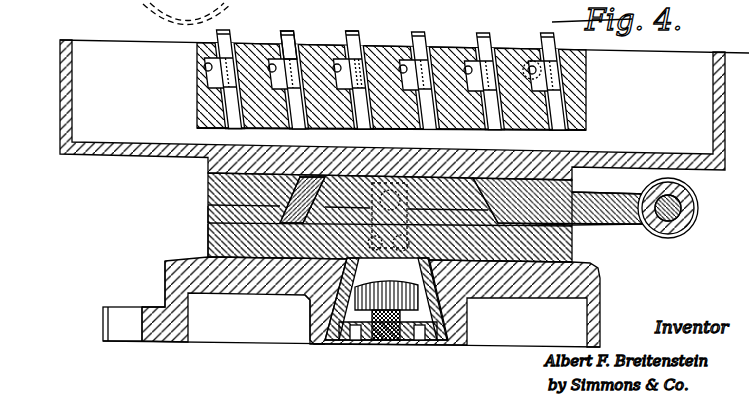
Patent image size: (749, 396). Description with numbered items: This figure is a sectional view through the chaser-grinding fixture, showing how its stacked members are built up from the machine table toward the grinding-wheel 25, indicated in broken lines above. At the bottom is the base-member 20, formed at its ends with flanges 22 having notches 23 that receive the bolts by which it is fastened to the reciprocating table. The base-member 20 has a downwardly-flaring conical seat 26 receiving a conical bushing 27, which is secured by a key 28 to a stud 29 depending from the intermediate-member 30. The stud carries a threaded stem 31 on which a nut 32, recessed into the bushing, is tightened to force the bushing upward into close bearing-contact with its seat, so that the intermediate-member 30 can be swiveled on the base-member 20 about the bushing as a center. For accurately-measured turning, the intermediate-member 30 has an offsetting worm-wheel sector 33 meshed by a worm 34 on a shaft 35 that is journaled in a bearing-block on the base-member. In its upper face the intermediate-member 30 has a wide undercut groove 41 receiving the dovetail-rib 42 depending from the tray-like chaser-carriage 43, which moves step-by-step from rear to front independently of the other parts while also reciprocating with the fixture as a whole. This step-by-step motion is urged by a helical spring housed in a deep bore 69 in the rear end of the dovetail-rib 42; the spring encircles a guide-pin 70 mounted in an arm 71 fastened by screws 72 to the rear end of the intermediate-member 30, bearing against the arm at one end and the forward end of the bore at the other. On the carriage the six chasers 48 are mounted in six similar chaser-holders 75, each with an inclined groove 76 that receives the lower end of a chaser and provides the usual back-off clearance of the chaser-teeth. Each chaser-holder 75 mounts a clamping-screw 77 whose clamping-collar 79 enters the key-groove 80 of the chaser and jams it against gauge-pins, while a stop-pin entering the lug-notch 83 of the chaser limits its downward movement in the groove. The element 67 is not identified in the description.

The base-member 20 is at (165, 262).
The flanges 22 is at (123, 305).
The notches 23 is at (120, 320).
The grinding-wheel 25 is at (146, 15).
The conical seat 26 is at (315, 320).
The conical bushing 27 is at (450, 330).
The key 28 is at (315, 297).
The stud 29 is at (437, 302).
The intermediate-member 30 is at (212, 226).
The threaded stem 31 is at (387, 340).
The nut 32 is at (363, 341).
The worm-wheel sector 33 is at (590, 225).
The worm 34 is at (697, 208).
The shaft 35 is at (670, 222).
The undercut groove 41 is at (563, 180).
The dovetail-rib 42 is at (212, 200).
The chaser-carriage 43 is at (59, 152).
The chasers 48 is at (291, 40).
The pin head 67 is at (353, 28).
The bore 69 is at (413, 203).
The guide-pin 70 is at (387, 187).
The arm 71 is at (366, 185).
The screws 72 is at (212, 250).
The chaser-holders 75 is at (200, 107).
The inclined groove 76 is at (557, 104).
The clamping-screw 77 is at (203, 68).
The clamping-collar 79 is at (208, 80).
The key-groove 80 is at (220, 58).
The lug-notch 83 is at (362, 62).